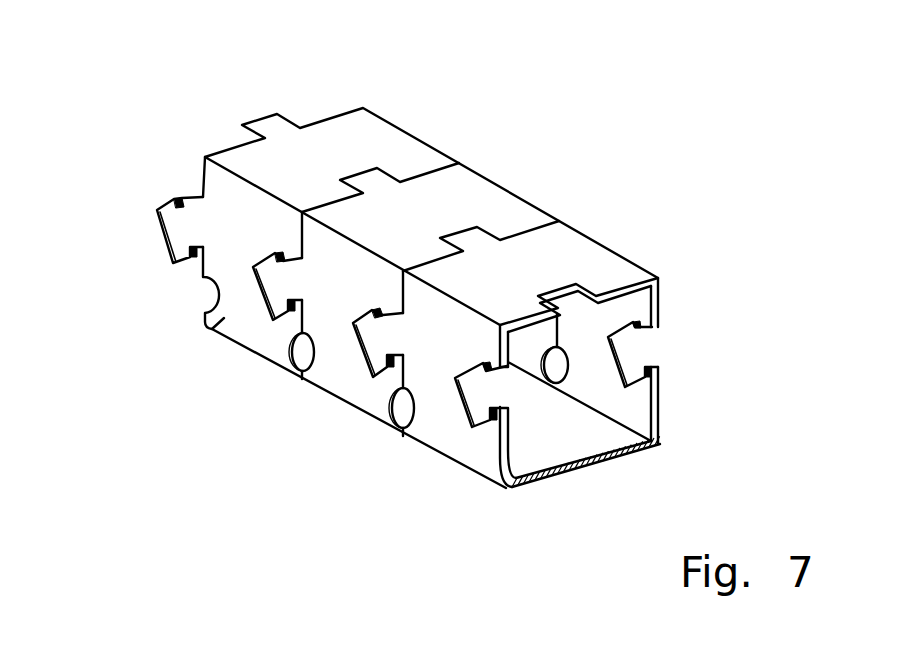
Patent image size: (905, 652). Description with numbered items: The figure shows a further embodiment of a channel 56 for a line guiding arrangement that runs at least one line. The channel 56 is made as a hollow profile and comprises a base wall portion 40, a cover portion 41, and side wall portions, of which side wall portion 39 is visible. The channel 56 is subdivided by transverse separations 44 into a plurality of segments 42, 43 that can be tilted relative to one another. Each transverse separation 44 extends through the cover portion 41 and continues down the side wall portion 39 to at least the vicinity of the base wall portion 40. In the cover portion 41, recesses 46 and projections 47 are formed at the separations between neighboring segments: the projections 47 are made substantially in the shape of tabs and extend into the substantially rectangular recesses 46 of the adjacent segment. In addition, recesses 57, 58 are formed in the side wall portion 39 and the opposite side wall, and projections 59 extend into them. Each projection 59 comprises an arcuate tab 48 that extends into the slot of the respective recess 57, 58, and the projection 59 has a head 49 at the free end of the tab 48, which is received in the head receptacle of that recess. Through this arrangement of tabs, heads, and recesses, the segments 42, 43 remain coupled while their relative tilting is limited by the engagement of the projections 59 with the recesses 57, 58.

The side wall portion 39 is at (440, 422).
The base wall portion 40 is at (558, 472).
The cover portion 41 is at (568, 253).
The segment 42 is at (232, 318).
The segment 43 is at (330, 367).
The transverse separation 44 is at (302, 325).
The recess 46 is at (575, 307).
The projection 47 is at (282, 125).
The arcuate tab 48 is at (197, 218).
The head 49 is at (172, 222).
The channel 56 is at (667, 142).
The recess 57 is at (628, 357).
The recess 58 is at (478, 397).
The projection 59 is at (175, 240).